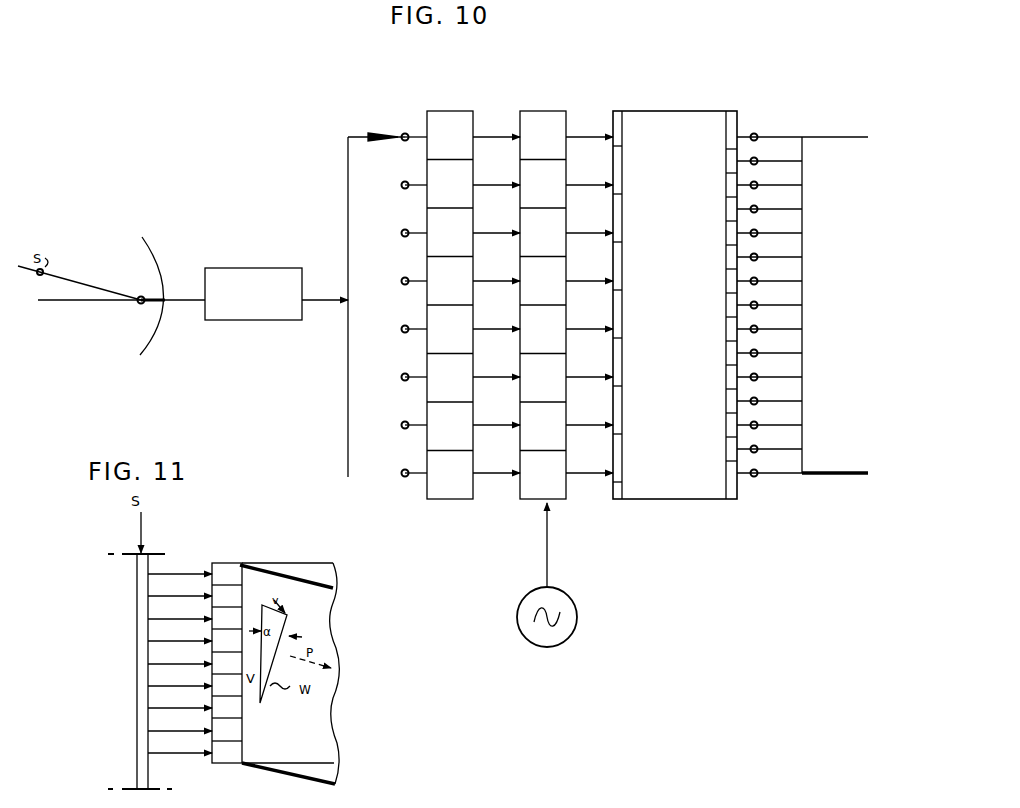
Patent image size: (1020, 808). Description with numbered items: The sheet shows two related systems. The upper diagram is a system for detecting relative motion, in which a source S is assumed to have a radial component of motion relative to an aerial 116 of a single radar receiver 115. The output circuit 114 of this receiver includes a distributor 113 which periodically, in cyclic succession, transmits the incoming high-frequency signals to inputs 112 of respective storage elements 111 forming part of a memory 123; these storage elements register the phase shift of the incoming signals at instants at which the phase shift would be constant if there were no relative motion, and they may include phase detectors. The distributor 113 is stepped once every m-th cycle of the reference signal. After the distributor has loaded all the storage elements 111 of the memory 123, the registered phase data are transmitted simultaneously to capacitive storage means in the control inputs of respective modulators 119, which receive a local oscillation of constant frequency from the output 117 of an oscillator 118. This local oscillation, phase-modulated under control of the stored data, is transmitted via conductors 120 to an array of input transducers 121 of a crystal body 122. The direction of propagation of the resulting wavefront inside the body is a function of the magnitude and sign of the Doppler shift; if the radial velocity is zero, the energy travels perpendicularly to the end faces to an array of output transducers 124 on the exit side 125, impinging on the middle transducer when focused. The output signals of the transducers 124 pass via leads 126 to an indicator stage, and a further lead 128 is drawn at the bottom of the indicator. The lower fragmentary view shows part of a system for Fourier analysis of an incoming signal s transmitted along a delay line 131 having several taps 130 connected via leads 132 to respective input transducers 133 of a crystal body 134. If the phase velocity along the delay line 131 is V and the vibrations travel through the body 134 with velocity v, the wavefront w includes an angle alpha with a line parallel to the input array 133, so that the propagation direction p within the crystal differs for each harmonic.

In FIG. 10, the storage elements 111 is at (457, 168).
In FIG. 10, the inputs of storage elements 112 is at (410, 183).
In FIG. 10, the distributor 113 is at (371, 134).
In FIG. 10, the output circuit 114 is at (348, 195).
In FIG. 10, the radar receiver 115 is at (250, 313).
In FIG. 10, the aerial 116 is at (158, 265).
In FIG. 10, the output of oscillator 117 is at (549, 557).
In FIG. 10, the oscillator 118 is at (577, 617).
In FIG. 10, the modulators 119 is at (537, 118).
In FIG. 10, the conductors 120 is at (577, 190).
In FIG. 10, the input transducers 121 is at (613, 158).
In FIG. 10, the crystal body 122 is at (681, 490).
In FIG. 10, the memory 123 is at (458, 503).
In FIG. 10, the output transducers 124 is at (714, 137).
In FIG. 10, the exit side 125 is at (762, 121).
In FIG. 10, the leads 126 is at (813, 289).
In FIG. 10, the indicator output lead 128 is at (813, 466).
In FIG. 11, the taps 130 is at (151, 595).
In FIG. 11, the delay line 131 is at (137, 617).
In FIG. 11, the leads 132 is at (196, 582).
In FIG. 11, the input transducers 133 is at (236, 602).
In FIG. 11, the crystal body 134 is at (289, 586).